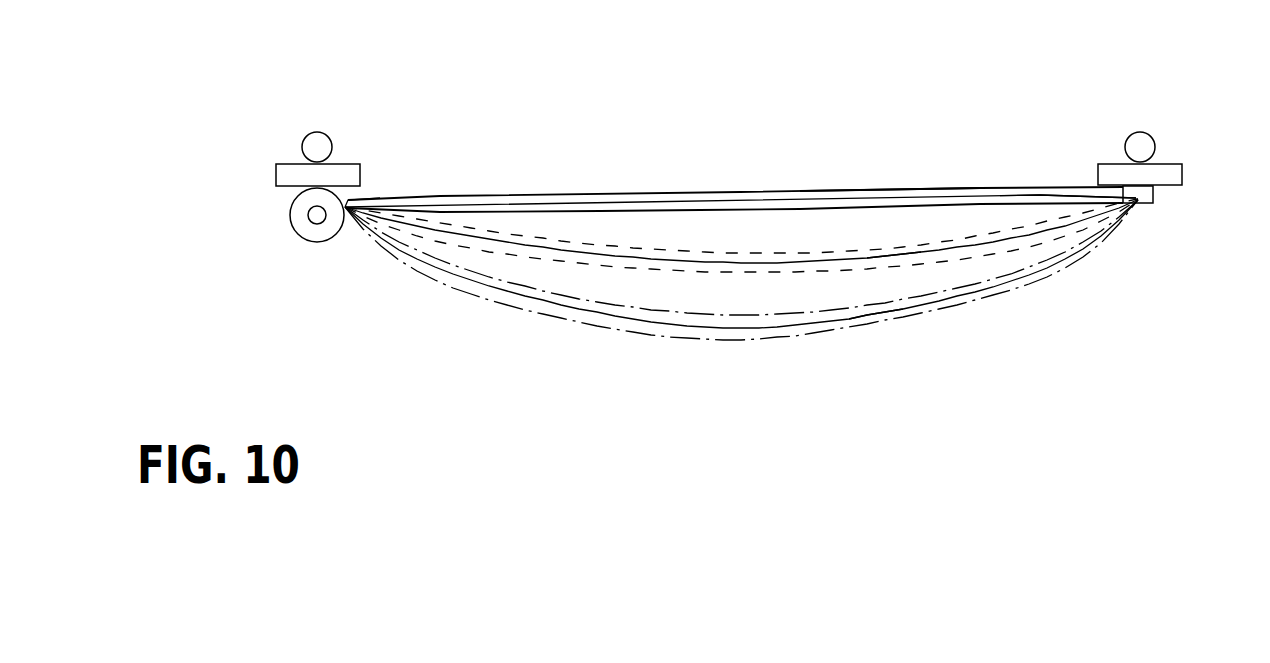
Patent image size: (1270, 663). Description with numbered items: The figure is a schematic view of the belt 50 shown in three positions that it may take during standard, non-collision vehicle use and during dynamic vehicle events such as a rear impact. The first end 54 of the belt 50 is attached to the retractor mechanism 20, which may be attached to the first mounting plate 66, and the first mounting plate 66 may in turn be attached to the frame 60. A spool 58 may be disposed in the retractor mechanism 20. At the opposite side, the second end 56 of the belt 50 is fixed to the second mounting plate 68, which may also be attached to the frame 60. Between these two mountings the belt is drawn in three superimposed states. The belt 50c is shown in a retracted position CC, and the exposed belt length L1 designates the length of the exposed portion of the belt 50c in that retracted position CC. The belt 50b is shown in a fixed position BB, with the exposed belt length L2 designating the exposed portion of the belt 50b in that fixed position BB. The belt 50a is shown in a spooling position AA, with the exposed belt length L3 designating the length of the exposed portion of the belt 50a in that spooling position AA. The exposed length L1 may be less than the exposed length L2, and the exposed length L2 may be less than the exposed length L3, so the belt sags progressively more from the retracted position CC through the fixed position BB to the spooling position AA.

The retractor mechanism 20 is at (290, 213).
The belt 50 is at (517, 198).
The belt in spooling position 50a is at (825, 334).
The belt in fixed position 50b is at (745, 251).
The belt in retracted position 50c is at (877, 188).
The first end of the belt 54 is at (363, 197).
The second end of the belt 56 is at (1157, 197).
The spool 58 is at (318, 223).
The frame 60 is at (303, 140).
The first mounting plate 66 is at (287, 165).
The second mounting plate 68 is at (1185, 173).
The exposed belt length in retracted position L1 is at (640, 202).
The exposed belt length in fixed position L2 is at (898, 257).
The exposed belt length in spooling position L3 is at (873, 316).
The spooling position AA is at (1002, 283).
The fixed position BB is at (945, 253).
The retracted position CC is at (1040, 201).